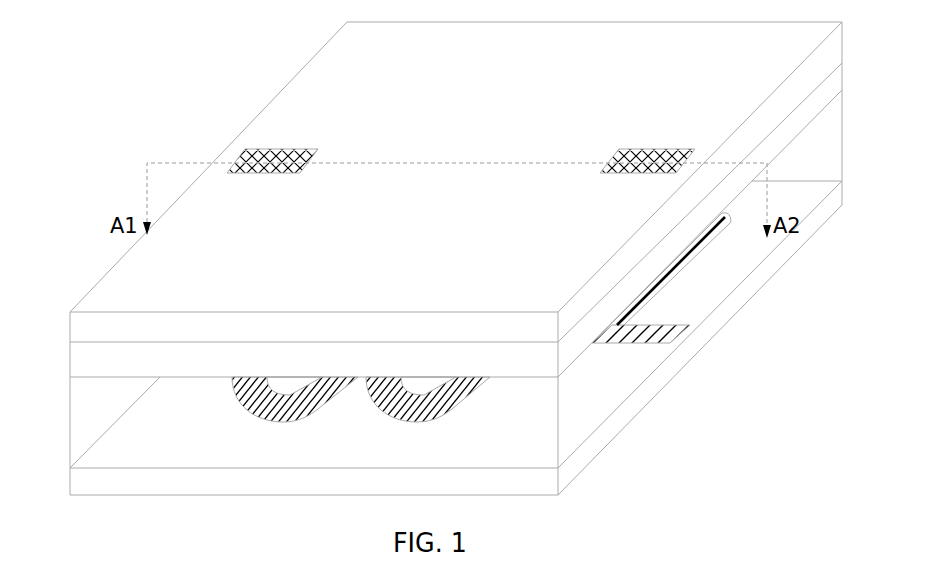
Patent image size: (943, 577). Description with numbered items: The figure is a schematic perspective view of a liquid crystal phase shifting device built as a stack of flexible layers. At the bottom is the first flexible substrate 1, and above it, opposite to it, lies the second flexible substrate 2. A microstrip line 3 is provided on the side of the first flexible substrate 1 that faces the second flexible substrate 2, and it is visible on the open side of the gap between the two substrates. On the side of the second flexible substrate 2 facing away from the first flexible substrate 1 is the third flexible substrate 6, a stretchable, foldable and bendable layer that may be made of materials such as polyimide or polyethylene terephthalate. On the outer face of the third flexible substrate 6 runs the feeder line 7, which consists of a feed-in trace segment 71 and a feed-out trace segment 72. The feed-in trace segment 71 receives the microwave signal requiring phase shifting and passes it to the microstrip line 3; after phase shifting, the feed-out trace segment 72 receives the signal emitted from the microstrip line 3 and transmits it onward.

The first flexible substrate 1 is at (72, 483).
The second flexible substrate 2 is at (76, 362).
The microstrip line 3 is at (673, 334).
The third flexible substrate 6 is at (130, 266).
The feeder line 7 is at (461, 128).
The feed-in trace segment 71 is at (297, 149).
The feed-out trace segment 72 is at (636, 147).